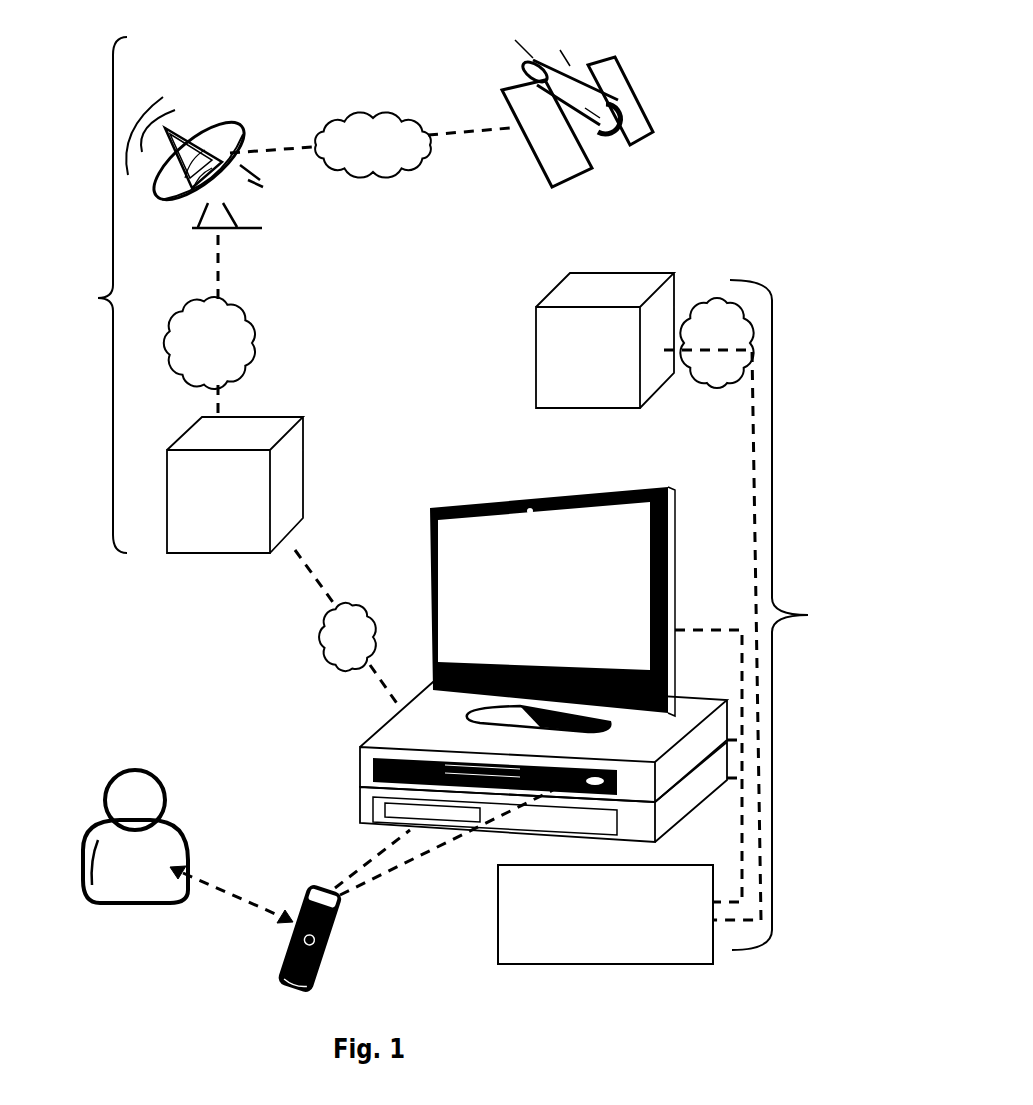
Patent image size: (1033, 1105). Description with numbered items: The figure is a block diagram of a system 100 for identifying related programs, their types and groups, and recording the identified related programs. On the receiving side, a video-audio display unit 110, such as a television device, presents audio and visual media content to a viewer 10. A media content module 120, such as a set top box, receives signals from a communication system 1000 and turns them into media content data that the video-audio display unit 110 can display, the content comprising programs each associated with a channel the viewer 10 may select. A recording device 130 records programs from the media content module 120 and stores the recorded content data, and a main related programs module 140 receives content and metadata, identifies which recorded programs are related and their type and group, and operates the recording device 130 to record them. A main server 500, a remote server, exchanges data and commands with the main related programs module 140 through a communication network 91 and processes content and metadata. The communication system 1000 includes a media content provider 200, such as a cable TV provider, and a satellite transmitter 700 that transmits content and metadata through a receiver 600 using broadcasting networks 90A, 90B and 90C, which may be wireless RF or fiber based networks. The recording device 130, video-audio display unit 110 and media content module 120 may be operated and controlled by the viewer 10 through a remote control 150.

The communication system 1000 is at (82, 295).
The system 100 is at (789, 615).
The receiver 600 is at (210, 118).
The broadcasting network 90A is at (363, 125).
The satellite transmitter 700 is at (613, 87).
The broadcasting network 90B is at (238, 343).
The media content provider 200 is at (283, 502).
The main server 500 is at (633, 290).
The communication network 91 is at (710, 307).
The broadcasting network 90C is at (352, 612).
The video-audio display unit 110 is at (625, 483).
The media content module 120 is at (362, 765).
The recording device 130 is at (360, 807).
The main related programs module 140 is at (497, 902).
The viewer 10 is at (122, 770).
The remote control 150 is at (282, 973).